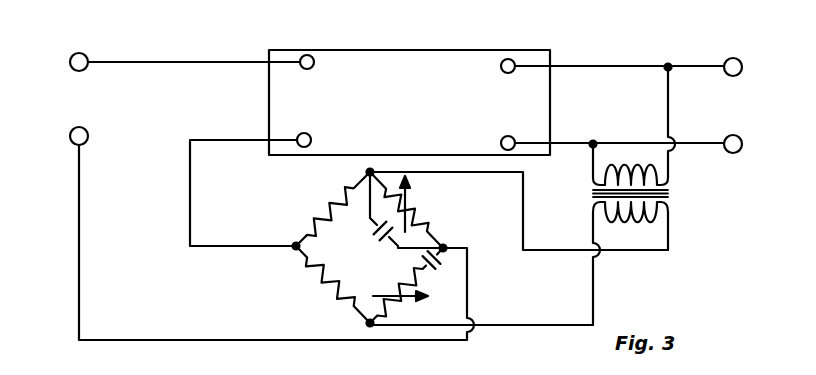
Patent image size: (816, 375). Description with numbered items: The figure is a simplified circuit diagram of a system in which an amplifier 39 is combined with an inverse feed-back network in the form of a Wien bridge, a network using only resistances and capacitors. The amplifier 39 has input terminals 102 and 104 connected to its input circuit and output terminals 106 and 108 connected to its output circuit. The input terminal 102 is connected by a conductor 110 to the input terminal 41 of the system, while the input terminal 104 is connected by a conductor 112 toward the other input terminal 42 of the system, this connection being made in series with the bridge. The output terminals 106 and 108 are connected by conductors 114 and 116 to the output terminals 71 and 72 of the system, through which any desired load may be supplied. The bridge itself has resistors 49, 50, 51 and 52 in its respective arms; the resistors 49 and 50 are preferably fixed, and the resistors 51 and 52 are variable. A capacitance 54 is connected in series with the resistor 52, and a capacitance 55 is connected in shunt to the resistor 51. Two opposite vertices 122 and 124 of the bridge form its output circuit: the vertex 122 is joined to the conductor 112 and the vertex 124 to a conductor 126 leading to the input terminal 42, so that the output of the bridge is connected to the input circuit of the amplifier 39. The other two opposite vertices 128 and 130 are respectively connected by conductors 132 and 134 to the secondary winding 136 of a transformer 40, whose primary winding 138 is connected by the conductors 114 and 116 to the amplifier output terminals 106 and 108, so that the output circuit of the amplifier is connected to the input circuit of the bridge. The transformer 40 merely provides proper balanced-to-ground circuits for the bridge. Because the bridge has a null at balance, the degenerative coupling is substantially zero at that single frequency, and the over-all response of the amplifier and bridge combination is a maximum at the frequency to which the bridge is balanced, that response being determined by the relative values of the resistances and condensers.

The amplifier 39 is at (395, 50).
The transformer 40 is at (647, 195).
The input terminal of the system 41 is at (79, 82).
The input terminal of the system 42 is at (64, 144).
The resistor 49 is at (333, 209).
The resistor 50 is at (333, 284).
The resistor 51 is at (408, 210).
The resistor 52 is at (400, 294).
The capacitance 54 is at (438, 262).
The capacitance 55 is at (396, 216).
The output terminal of the system 71 is at (733, 91).
The output terminal of the system 72 is at (745, 153).
The input terminal 102 is at (310, 56).
The input terminal 104 is at (311, 137).
The output terminal 106 is at (513, 60).
The output terminal 108 is at (514, 138).
The conductor 110 is at (172, 58).
The conductor 112 is at (207, 138).
The conductor 114 is at (599, 63).
The conductor 116 is at (567, 142).
The vertex of the bridge 122 is at (292, 244).
The vertex of the bridge 124 is at (444, 247).
The conductor 126 is at (78, 267).
The vertex of the bridge 128 is at (371, 171).
The vertex of the bridge 130 is at (369, 327).
The conductor 132 is at (525, 222).
The conductor 134 is at (521, 324).
The secondary winding 136 is at (652, 218).
The primary winding 138 is at (613, 166).